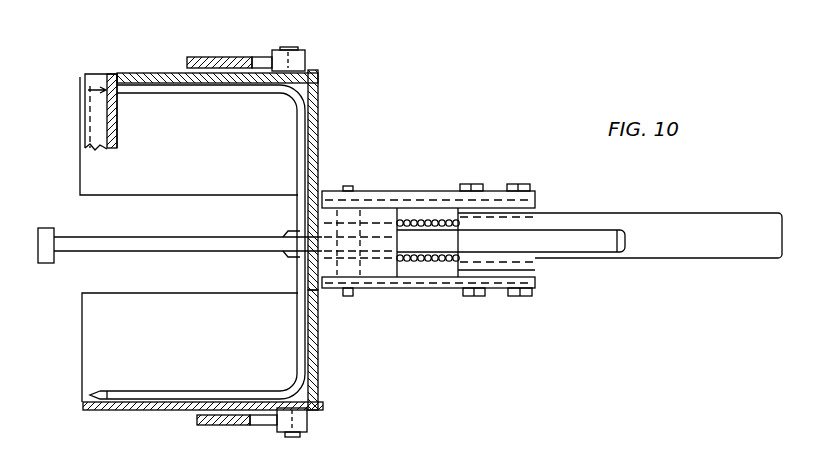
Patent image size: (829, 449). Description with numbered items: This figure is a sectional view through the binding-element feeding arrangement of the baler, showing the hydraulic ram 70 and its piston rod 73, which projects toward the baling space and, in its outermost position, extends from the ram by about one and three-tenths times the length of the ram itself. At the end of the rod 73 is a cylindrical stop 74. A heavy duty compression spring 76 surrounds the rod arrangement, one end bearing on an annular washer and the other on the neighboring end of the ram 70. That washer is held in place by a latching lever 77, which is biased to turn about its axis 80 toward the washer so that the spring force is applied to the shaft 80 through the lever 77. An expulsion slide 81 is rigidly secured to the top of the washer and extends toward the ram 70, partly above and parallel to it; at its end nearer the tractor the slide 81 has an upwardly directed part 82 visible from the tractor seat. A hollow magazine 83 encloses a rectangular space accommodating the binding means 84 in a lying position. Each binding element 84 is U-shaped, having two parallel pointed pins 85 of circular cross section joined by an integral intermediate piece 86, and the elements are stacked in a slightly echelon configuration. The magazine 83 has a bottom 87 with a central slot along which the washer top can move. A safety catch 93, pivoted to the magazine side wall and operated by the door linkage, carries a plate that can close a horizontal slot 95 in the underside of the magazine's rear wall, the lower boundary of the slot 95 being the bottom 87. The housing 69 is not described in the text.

The housing 69 is at (320, 121).
The hydraulic ram 70 is at (698, 259).
The piston rod 73 is at (71, 253).
The cylindrical stop 74 is at (57, 231).
The compression spring 76 is at (428, 219).
The latching lever 77 is at (290, 232).
The axis (shaft) 80 is at (350, 297).
The slide 81 is at (378, 213).
The upwardly directed part 82 is at (606, 238).
The magazine 83 is at (323, 381).
The binding means (binding elements) 84 is at (298, 152).
The pins 85 is at (168, 92).
The intermediate piece 86 is at (302, 334).
The bottom 87 is at (165, 296).
The safety catch 93 is at (200, 57).
The horizontal slot 95 is at (80, 98).